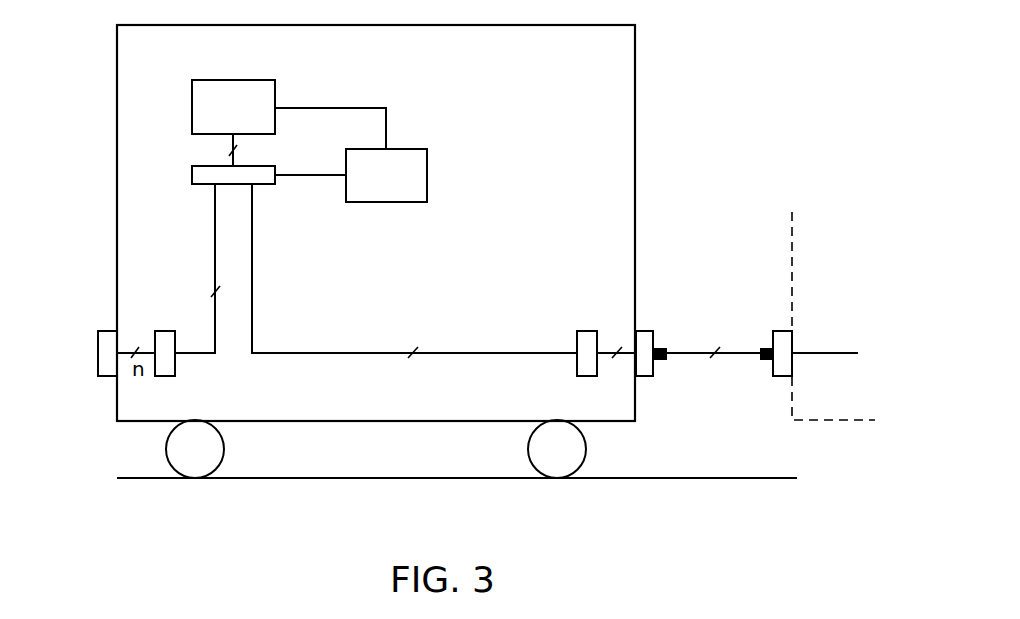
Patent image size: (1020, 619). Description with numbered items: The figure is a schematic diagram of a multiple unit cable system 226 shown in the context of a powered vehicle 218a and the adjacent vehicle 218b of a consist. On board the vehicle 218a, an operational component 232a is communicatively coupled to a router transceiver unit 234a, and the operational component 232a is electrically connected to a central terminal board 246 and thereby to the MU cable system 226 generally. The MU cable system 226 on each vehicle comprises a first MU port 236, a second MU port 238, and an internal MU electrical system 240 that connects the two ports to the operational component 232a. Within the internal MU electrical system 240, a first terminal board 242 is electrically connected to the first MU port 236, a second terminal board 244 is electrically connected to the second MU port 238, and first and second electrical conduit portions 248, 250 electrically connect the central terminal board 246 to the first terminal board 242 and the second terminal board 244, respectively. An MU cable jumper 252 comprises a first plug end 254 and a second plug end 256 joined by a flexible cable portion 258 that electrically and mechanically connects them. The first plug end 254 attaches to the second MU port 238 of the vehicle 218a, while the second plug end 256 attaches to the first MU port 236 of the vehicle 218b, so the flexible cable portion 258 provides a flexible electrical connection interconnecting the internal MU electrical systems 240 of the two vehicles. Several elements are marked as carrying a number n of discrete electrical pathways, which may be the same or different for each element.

The vehicle 218a is at (635, 82).
The vehicle 218b is at (793, 228).
The MU cable system 226 is at (106, 300).
The operational component 232a is at (192, 107).
The router transceiver unit 234a is at (427, 173).
The first MU port 236 is at (98, 353).
The second MU port 238 is at (648, 330).
The internal MU electrical system 240 is at (477, 312).
The first terminal board 242 is at (164, 331).
The second terminal board 244 is at (587, 331).
The central terminal board 246 is at (192, 172).
The first electrical conduit portion 248 is at (215, 258).
The second electrical conduit portion 250 is at (252, 260).
The MU cable jumper 252 is at (737, 310).
The first plug end 254 is at (661, 362).
The second plug end 256 is at (767, 362).
The flexible cable portion 258 is at (710, 348).